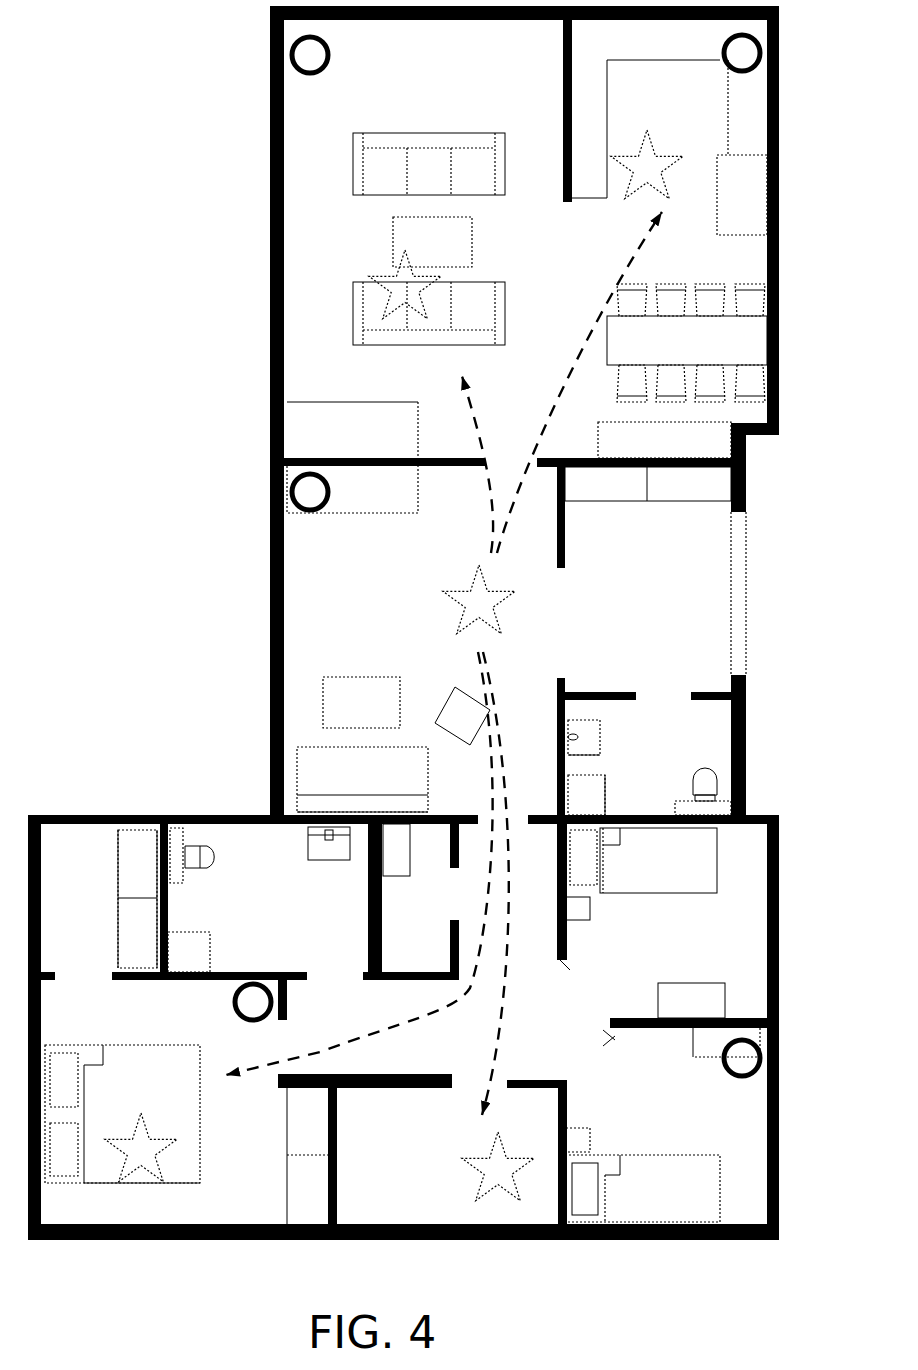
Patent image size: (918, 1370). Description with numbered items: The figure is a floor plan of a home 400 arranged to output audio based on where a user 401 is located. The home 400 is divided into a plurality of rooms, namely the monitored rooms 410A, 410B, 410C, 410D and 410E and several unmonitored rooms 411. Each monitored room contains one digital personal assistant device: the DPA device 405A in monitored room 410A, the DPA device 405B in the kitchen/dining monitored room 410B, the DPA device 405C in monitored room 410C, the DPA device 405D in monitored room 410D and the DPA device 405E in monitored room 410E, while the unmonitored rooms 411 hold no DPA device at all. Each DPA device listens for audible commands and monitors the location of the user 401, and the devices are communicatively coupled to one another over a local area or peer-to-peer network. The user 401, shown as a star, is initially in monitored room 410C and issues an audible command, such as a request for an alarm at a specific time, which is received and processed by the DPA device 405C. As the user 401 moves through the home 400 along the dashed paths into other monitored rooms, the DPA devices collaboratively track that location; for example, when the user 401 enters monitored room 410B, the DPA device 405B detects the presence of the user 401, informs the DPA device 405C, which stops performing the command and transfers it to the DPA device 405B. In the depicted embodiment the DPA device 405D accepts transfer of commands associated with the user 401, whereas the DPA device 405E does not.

The home 400 is at (110, 32).
The user 401 is at (673, 179).
The digital personal assistant device 405A is at (334, 56).
The digital personal assistant device 405B is at (720, 64).
The digital personal assistant device 405C is at (334, 506).
The digital personal assistant device 405D is at (231, 1002).
The digital personal assistant device 405E is at (720, 1059).
The monitored room 410A is at (527, 53).
The monitored room 410B is at (658, 53).
The monitored room 410C is at (376, 633).
The monitored room 410D is at (273, 1206).
The monitored room 410E is at (753, 1206).
The unmonitored room 411 is at (660, 543).